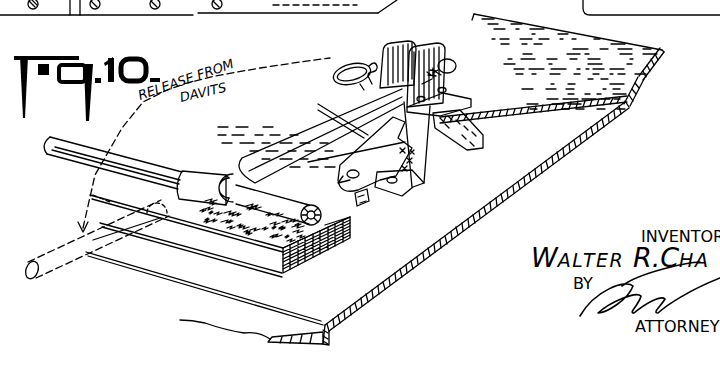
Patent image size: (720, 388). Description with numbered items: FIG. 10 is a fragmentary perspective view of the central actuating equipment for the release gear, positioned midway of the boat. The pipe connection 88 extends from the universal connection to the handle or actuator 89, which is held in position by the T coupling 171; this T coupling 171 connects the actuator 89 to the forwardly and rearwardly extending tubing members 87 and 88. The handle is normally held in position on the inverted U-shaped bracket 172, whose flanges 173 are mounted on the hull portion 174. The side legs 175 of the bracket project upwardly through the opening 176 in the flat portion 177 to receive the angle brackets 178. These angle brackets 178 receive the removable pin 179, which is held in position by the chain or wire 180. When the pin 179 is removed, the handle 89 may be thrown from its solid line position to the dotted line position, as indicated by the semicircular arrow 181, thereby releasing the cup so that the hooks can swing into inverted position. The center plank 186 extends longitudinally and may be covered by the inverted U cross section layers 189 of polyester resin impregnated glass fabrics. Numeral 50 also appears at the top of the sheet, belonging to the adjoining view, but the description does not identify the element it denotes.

The panel 50 is at (52, 18).
The tubing member 87 is at (296, 203).
The pipe connection 88 is at (75, 160).
The actuator 89 is at (283, 136).
The T coupling 171 is at (197, 174).
The inverted U-shaped bracket 172 is at (428, 158).
The flanges 173 is at (480, 140).
The hull portion 174 is at (513, 193).
The side legs 175 is at (479, 96).
The opening 176 is at (352, 158).
The flat portion 177 is at (503, 51).
The angle brackets 178 is at (440, 43).
The removable pin 179 is at (450, 61).
The chain or wire 180 is at (351, 60).
The semicircular arrow 181 is at (281, 87).
The center plank 186 is at (320, 255).
The inverted U cross section layers 189 is at (347, 221).